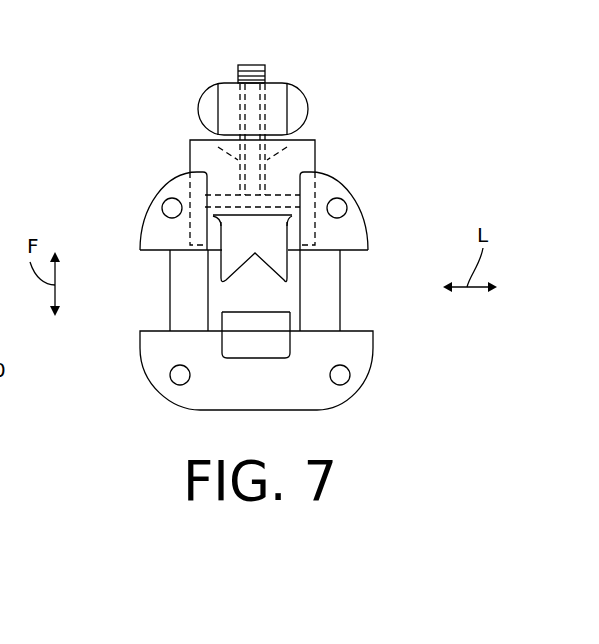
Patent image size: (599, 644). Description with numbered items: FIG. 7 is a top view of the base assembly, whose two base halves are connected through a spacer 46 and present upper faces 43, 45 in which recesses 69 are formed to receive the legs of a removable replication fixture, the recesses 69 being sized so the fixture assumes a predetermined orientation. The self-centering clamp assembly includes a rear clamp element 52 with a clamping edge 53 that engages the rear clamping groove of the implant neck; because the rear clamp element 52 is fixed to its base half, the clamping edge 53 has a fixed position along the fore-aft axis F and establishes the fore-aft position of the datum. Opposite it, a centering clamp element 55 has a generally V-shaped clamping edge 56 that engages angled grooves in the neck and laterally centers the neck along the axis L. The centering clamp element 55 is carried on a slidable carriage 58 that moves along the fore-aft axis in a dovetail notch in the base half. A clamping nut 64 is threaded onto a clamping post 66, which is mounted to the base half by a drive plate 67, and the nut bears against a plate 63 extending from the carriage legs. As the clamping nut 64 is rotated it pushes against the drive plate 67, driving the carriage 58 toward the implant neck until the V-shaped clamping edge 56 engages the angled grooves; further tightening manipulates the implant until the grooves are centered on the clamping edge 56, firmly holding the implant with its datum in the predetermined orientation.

The upper face 43 is at (355, 232).
The upper face 45 is at (360, 348).
The spacer 46 is at (185, 275).
The rear clamp element 52 is at (242, 340).
The clamping edge 53 is at (244, 309).
The centering clamp element 55 is at (232, 227).
The V-shaped clamping edge 56 is at (265, 268).
The slidable carriage 58 is at (200, 157).
The plate 63 is at (222, 148).
The clamping nut 64 is at (295, 112).
The clamping post 66 is at (265, 75).
The drive plate 67 is at (277, 200).
The recesses 69 is at (167, 205).